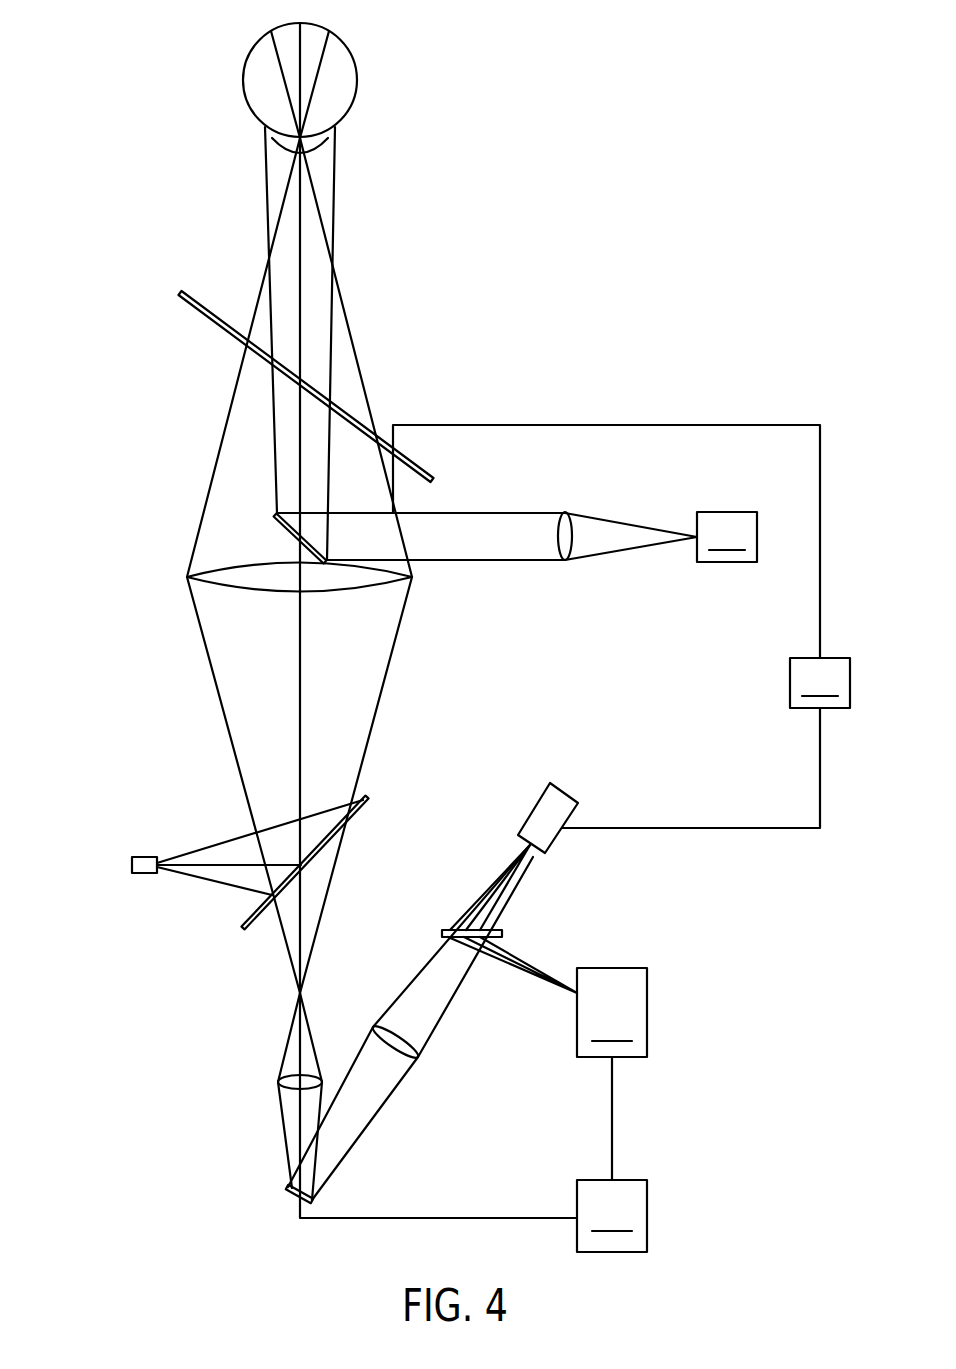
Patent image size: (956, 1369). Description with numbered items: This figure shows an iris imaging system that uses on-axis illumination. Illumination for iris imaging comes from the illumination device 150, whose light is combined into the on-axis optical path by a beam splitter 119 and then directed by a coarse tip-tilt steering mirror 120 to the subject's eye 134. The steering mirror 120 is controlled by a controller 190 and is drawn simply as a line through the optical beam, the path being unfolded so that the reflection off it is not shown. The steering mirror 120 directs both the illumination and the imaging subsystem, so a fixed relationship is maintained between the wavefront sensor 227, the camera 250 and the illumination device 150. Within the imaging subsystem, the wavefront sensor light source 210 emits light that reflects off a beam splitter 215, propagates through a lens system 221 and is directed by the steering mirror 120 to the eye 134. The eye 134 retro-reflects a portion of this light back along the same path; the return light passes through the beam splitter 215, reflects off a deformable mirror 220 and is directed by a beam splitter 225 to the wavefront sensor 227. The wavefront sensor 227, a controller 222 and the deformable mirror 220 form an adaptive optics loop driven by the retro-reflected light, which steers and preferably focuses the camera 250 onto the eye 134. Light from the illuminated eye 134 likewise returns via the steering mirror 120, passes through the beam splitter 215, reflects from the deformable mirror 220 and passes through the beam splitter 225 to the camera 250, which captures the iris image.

The eye 134 is at (357, 78).
The steering mirror 120 is at (412, 460).
The beam splitter 119 is at (283, 533).
The illumination device 150 is at (727, 537).
The controller 190 is at (820, 683).
The lens system 221 is at (185, 577).
The light source 210 is at (145, 856).
The beam splitter 215 is at (358, 806).
The beam splitter 225 is at (452, 929).
The camera 250 is at (570, 790).
The wavefront sensor 227 is at (612, 1012).
The controller 222 is at (612, 1216).
The deformable mirror 220 is at (284, 1192).